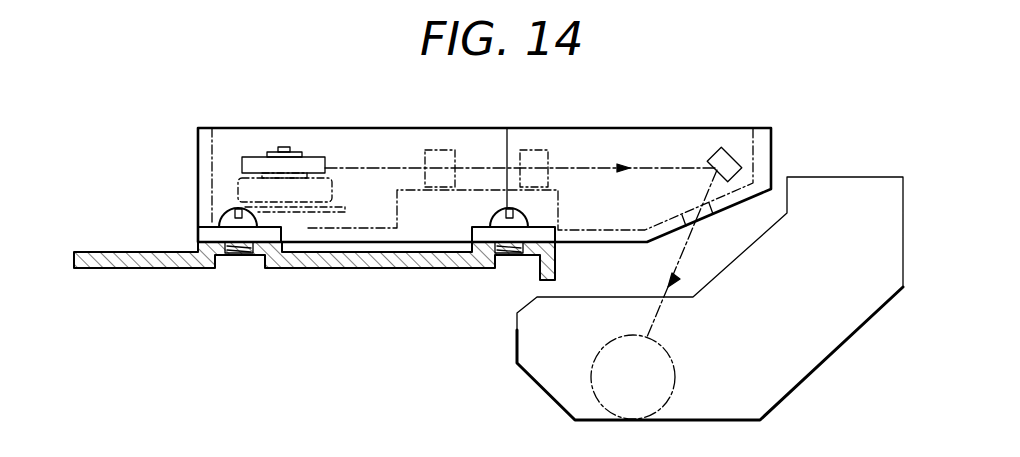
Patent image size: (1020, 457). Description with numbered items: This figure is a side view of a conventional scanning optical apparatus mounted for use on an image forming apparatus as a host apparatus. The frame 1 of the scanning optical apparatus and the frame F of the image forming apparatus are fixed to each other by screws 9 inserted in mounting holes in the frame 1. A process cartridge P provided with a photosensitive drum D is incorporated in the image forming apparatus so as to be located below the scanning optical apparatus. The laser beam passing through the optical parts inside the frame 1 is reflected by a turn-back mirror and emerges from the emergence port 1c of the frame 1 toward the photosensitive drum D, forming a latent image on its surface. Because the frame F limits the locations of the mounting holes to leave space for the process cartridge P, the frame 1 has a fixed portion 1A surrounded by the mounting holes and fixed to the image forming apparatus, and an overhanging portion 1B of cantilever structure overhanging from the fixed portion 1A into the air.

The frame 1 is at (203, 166).
The fixed portion 1A is at (333, 127).
The overhanging portion 1B is at (665, 127).
The emergence port 1c is at (682, 232).
The screws 9 is at (242, 257).
The frame of the image forming apparatus F is at (143, 269).
The photosensitive drum D is at (677, 373).
The process cartridge P is at (835, 348).